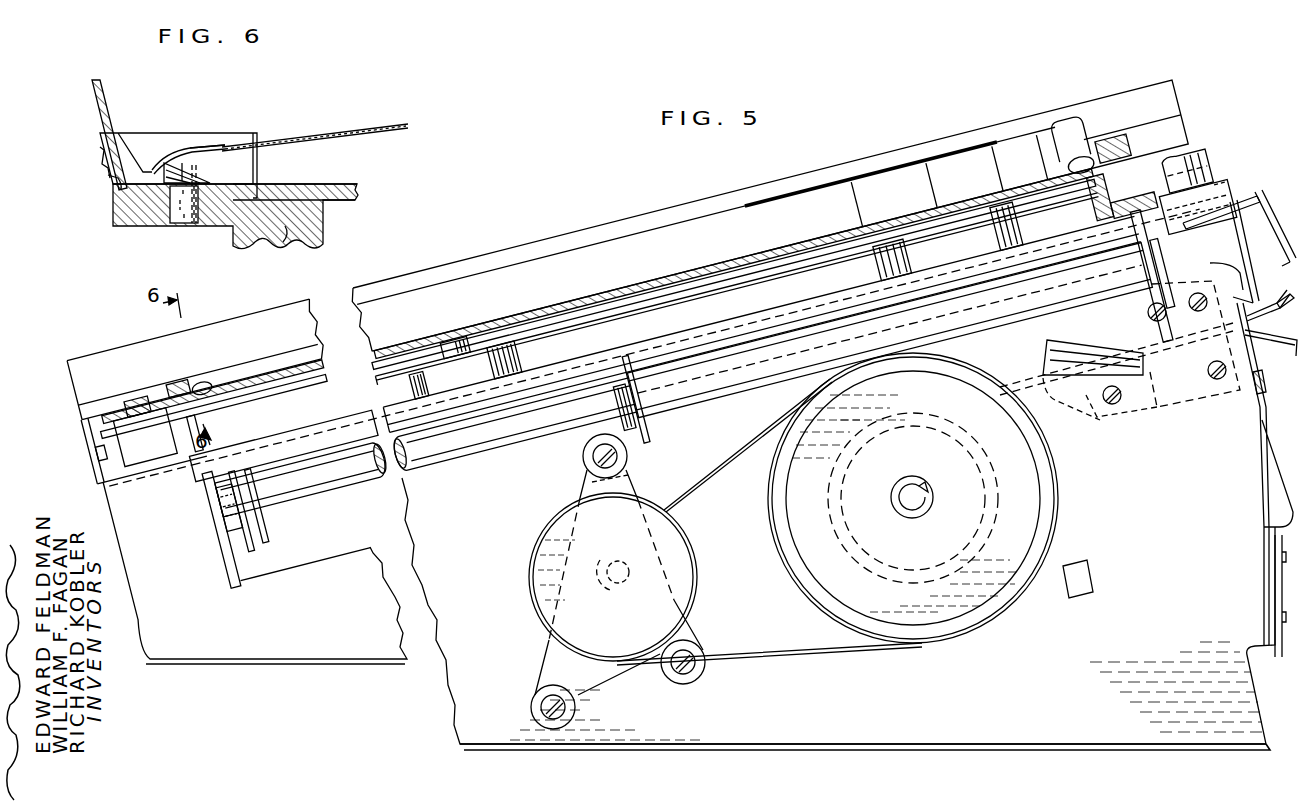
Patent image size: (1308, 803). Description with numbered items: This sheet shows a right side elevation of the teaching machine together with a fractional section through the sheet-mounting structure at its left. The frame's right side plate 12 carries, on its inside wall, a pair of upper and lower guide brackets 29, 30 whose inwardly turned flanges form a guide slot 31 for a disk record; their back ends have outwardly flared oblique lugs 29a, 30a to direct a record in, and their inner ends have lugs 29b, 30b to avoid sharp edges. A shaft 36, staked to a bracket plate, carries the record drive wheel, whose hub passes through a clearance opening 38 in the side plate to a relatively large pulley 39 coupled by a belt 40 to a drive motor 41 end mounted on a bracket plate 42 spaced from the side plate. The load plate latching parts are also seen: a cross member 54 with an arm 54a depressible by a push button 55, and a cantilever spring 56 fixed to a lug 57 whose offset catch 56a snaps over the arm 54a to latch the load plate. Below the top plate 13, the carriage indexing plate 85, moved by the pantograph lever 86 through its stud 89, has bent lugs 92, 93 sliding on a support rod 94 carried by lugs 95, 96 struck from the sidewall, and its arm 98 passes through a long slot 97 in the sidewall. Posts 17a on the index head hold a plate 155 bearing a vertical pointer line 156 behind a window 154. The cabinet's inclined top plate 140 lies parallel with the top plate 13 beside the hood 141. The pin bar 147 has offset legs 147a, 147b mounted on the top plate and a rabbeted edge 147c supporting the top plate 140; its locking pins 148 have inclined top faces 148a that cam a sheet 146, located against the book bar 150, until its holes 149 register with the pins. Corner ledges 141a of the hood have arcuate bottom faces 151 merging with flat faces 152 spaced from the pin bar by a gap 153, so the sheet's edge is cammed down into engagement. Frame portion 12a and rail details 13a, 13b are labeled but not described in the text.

In FIG. 5, the right side plate 12 is at (200, 593).
In FIG. 5, the frame flange 12a is at (330, 657).
In FIG. 5, the top plate 13 is at (770, 330).
In FIG. 5, the rail stop 13a is at (96, 456).
In FIG. 5, the rail end 13b is at (1232, 172).
In FIG. 5, the upstanding posts 17a is at (998, 224).
In FIG. 5, the upper guide bracket 29 is at (1262, 302).
In FIG. 5, the oblique lug 29a is at (1274, 316).
In FIG. 5, the lug 29b is at (1060, 345).
In FIG. 5, the lower guide bracket 30 is at (1254, 338).
In FIG. 5, the oblique lug 30a is at (1260, 374).
In FIG. 5, the lug 30b is at (1075, 396).
In FIG. 5, the guide slot 31 is at (1152, 410).
In FIG. 5, the shaft 36 is at (930, 502).
In FIG. 5, the clearance opening 38 is at (994, 524).
In FIG. 5, the pulley 39 is at (988, 594).
In FIG. 5, the belt 40 is at (738, 460).
In FIG. 5, the drive motor 41 is at (540, 616).
In FIG. 5, the bracket plate 42 is at (614, 672).
In FIG. 5, the cross member 54 is at (1278, 252).
In FIG. 5, the arm 54a is at (1186, 228).
In FIG. 5, the push button 55 is at (1215, 156).
In FIG. 5, the cantilever spring 56 is at (1262, 485).
In FIG. 5, the catch 56a is at (1210, 263).
In FIG. 5, the lug 57 is at (1278, 578).
In FIG. 5, the carriage indexing plate 85 is at (306, 430).
In FIG. 5, the pantograph lever 86 is at (614, 320).
In FIG. 5, the stud 89 is at (466, 336).
In FIG. 5, the downwardly bent lug 92 is at (270, 536).
In FIG. 5, the downwardly bent lug 93 is at (636, 430).
In FIG. 5, the support rod 94 is at (436, 470).
In FIG. 5, the lug 95 is at (233, 580).
In FIG. 5, the lug 96 is at (1145, 312).
In FIG. 5, the long slot 97 is at (668, 376).
In FIG. 5, the arm 98 is at (788, 352).
In FIG. 6, the top inclined plate 140 is at (340, 185).
In FIG. 5, the hood 141 is at (452, 272).
In FIG. 6, the corner ledges 141a is at (120, 142).
In FIG. 5, the corner ledges 141a is at (1108, 140).
In FIG. 6, the sheet 146 is at (345, 127).
In FIG. 6, the pin bar 147 is at (115, 210).
In FIG. 5, the pin bar 147 is at (800, 226).
In FIG. 5, the offset leg 147a is at (112, 482).
In FIG. 5, the offset leg 147b is at (1150, 194).
In FIG. 6, the rabbeted edge 147c is at (278, 242).
In FIG. 6, the locking pins 148 is at (210, 168).
In FIG. 5, the locking pins 148 is at (1068, 127).
In FIG. 6, the inclined top face 148a is at (182, 147).
In FIG. 6, the holes 149 is at (232, 147).
In FIG. 5, the book bar 150 is at (96, 416).
In FIG. 6, the arcuate bottom faces 151 is at (165, 142).
In FIG. 6, the flat faces 152 is at (102, 165).
In FIG. 6, the gap 153 is at (111, 182).
In FIG. 5, the gap 153 is at (170, 362).
In FIG. 6, the window 154 is at (100, 122).
In FIG. 5, the window 154 is at (627, 250).
In FIG. 5, the plate 155 is at (840, 193).
In FIG. 5, the pointer line 156 is at (937, 162).